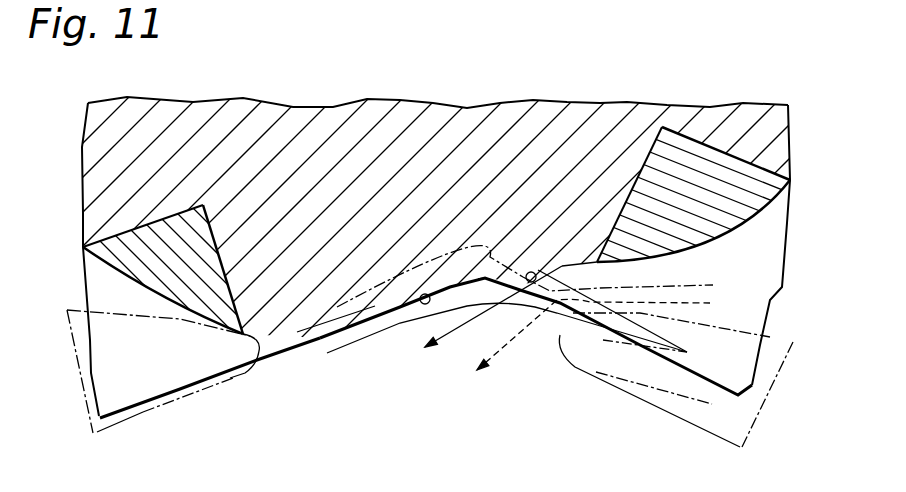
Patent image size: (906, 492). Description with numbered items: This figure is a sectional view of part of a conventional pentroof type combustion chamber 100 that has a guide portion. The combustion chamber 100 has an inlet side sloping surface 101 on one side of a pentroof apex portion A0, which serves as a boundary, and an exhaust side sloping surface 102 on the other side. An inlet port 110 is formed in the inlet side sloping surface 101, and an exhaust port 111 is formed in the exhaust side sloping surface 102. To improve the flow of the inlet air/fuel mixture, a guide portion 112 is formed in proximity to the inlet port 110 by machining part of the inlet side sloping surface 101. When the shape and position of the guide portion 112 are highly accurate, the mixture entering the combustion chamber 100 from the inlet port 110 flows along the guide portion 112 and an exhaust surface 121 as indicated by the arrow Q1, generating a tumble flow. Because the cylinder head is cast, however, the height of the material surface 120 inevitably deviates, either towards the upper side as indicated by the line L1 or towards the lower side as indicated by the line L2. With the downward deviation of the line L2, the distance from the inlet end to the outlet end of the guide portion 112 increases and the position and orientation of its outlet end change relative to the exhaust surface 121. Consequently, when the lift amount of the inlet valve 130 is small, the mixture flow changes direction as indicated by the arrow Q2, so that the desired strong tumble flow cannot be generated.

The combustion chamber 100 is at (431, 281).
The inlet side sloping surface 101 is at (640, 362).
The exhaust side sloping surface 102 is at (227, 382).
The inlet port 110 is at (723, 377).
The exhaust port 111 is at (140, 400).
The guide portion 112 is at (539, 272).
The material surface 120 is at (380, 316).
The exhaust surface 121 is at (421, 295).
The inlet valve 130 is at (660, 413).
The pentroof apex portion A0 is at (488, 266).
The line L1 is at (347, 312).
The line L2 is at (357, 345).
The arrow Q1 is at (459, 329).
The arrow Q2 is at (507, 344).